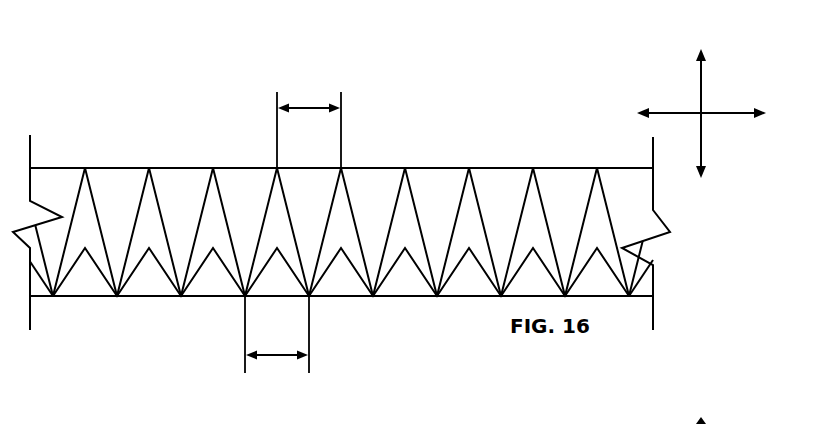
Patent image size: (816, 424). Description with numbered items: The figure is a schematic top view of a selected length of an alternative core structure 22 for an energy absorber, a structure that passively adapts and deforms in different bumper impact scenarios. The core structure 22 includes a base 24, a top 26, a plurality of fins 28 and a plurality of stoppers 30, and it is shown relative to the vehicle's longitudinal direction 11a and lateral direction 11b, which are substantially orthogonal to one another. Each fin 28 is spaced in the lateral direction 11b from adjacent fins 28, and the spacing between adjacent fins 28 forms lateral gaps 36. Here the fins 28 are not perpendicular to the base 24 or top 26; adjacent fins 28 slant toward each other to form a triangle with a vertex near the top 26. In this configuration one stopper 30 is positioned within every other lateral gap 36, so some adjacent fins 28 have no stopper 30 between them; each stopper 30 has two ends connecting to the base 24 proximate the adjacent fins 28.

The core structure 22 is at (530, 131).
The base 24 is at (200, 296).
The top 26 is at (252, 168).
The fins 28 is at (203, 190).
The stoppers 30 is at (341, 278).
The lateral gaps 36 is at (310, 105).
The longitudinal direction 11a is at (701, 90).
The lateral direction 11b is at (678, 113).